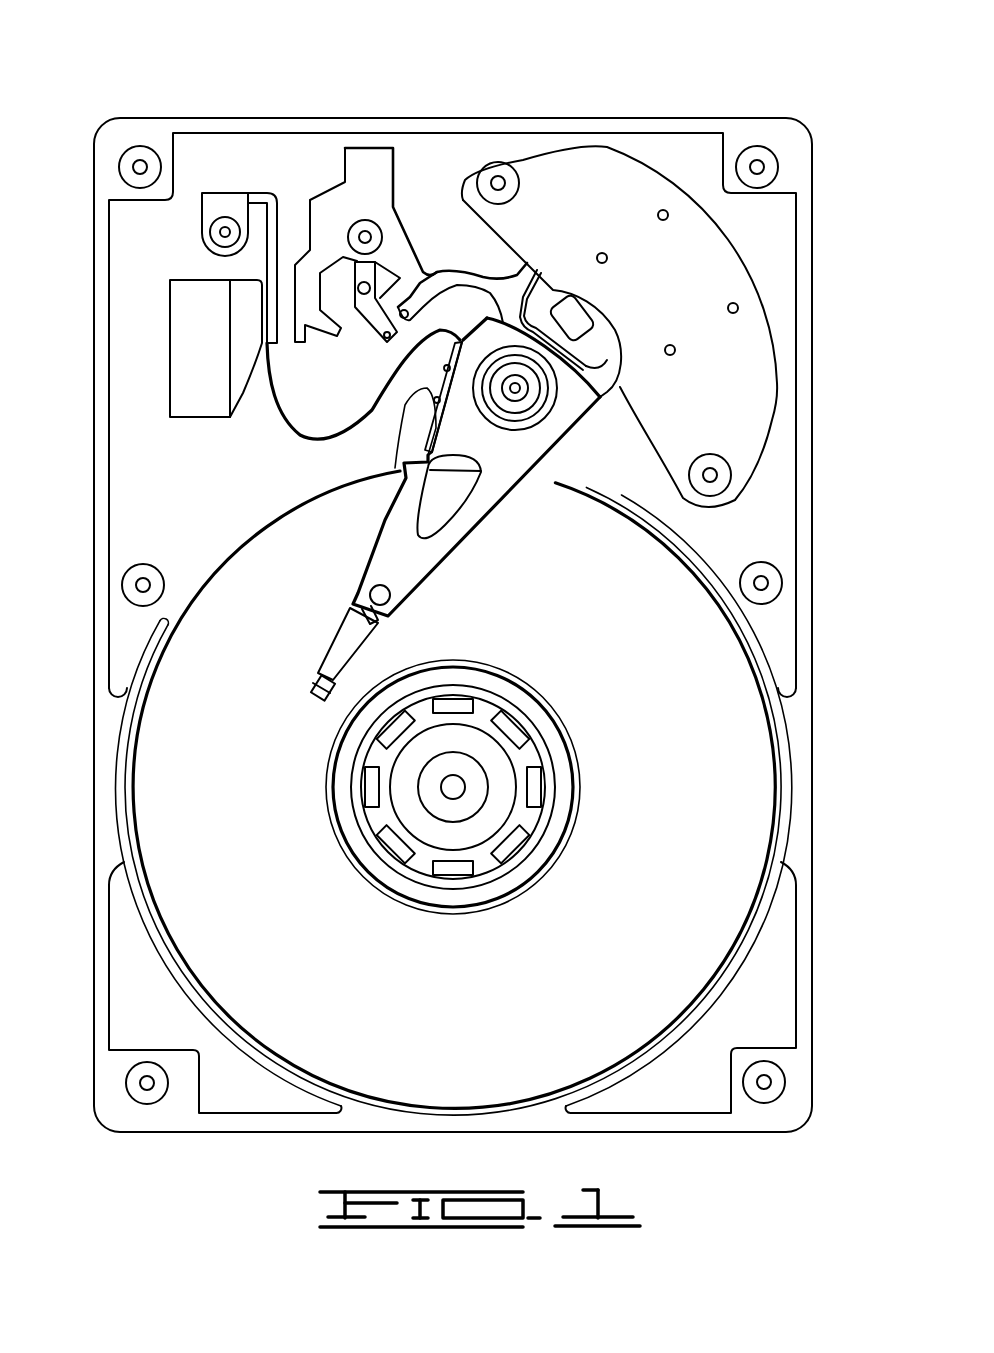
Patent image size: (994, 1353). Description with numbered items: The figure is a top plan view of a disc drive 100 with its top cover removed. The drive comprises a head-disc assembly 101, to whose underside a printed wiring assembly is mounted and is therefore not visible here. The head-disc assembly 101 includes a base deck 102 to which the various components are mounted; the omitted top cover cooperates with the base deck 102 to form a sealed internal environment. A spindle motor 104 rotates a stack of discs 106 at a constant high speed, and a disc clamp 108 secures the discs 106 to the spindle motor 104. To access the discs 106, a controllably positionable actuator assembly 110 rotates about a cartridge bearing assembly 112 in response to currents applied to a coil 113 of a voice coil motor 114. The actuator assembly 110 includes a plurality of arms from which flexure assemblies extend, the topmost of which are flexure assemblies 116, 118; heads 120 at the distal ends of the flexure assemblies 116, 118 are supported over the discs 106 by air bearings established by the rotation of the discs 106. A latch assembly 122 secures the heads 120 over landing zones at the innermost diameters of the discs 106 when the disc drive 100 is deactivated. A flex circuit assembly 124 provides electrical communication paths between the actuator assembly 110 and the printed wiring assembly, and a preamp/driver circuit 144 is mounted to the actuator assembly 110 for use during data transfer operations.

The disc drive 100 is at (205, 100).
The head-disc assembly 101 is at (143, 277).
The base deck 102 is at (190, 487).
The spindle motor 104 is at (462, 818).
The discs 106 is at (703, 872).
The disc clamp 108 is at (348, 832).
The actuator assembly 110 is at (523, 405).
The cartridge bearing assembly 112 is at (490, 463).
The coil 113 is at (610, 348).
The voice coil motor 114 is at (551, 222).
The flexure assembly 116 is at (390, 570).
The flexure assembly 118 is at (340, 653).
The heads 120 is at (308, 683).
The latch assembly 122 is at (363, 163).
The flex circuit assembly 124 is at (302, 450).
The preamp/driver circuit 144 is at (415, 450).